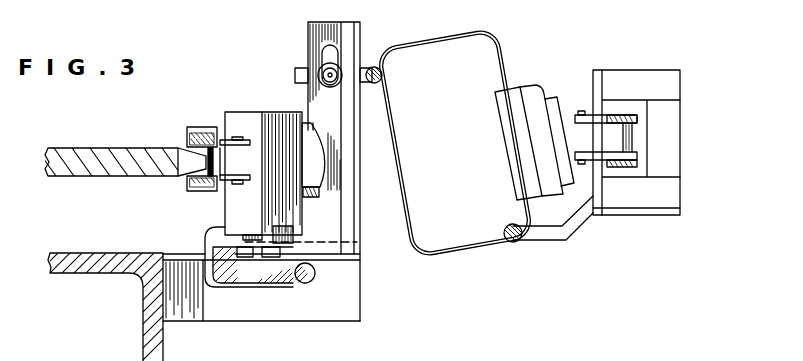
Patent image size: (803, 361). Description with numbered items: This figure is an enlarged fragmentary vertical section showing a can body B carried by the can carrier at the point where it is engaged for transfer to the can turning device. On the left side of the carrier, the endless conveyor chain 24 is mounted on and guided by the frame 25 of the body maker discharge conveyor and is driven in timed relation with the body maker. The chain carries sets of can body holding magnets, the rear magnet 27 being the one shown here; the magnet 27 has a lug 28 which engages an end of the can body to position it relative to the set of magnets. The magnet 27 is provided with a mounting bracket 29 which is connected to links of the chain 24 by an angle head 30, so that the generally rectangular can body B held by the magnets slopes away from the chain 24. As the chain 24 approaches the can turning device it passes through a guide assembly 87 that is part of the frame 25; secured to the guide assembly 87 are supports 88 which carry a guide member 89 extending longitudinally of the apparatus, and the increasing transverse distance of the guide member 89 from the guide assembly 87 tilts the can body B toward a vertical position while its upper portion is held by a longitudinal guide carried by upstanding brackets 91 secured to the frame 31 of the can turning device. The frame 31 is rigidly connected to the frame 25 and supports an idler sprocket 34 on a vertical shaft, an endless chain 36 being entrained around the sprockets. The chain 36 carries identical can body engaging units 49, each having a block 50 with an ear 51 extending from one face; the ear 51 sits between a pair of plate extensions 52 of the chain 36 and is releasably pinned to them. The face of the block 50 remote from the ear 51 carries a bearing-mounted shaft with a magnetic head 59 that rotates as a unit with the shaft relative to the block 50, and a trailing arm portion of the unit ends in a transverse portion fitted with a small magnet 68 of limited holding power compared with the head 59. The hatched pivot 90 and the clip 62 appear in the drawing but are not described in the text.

The endless conveyor chain 24 is at (621, 112).
The frame 25 is at (680, 72).
The rear magnet 27 is at (523, 88).
The lug 28 is at (503, 118).
The mounting bracket 29 is at (551, 97).
The angle head 30 is at (571, 124).
The frame 31 is at (127, 288).
The idler sprocket 34 is at (116, 147).
The endless chain 36 is at (187, 133).
The can body engaging unit 49 is at (260, 104).
The block 50 is at (238, 115).
The ear 51 is at (243, 163).
The plate extensions 52 is at (222, 138).
The head 59 is at (313, 196).
The clip 62 is at (241, 280).
The small magnet 68 is at (306, 283).
The guide assembly 87 is at (591, 189).
The supports 88 is at (613, 215).
The guide member 89 is at (514, 243).
The pivot 90 is at (369, 67).
The upstanding brackets 91 is at (310, 38).
The can body B is at (496, 34).